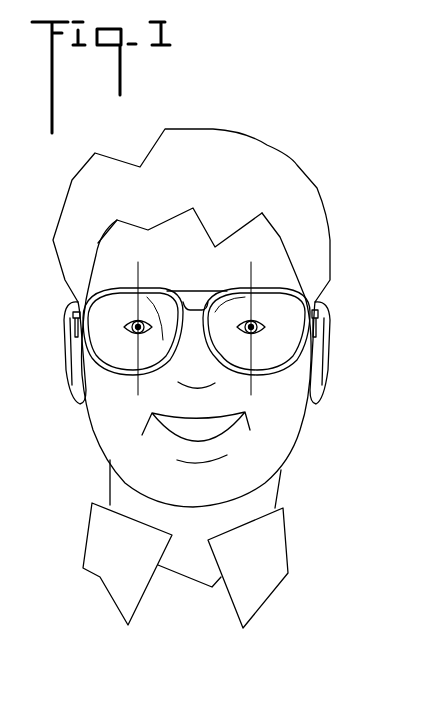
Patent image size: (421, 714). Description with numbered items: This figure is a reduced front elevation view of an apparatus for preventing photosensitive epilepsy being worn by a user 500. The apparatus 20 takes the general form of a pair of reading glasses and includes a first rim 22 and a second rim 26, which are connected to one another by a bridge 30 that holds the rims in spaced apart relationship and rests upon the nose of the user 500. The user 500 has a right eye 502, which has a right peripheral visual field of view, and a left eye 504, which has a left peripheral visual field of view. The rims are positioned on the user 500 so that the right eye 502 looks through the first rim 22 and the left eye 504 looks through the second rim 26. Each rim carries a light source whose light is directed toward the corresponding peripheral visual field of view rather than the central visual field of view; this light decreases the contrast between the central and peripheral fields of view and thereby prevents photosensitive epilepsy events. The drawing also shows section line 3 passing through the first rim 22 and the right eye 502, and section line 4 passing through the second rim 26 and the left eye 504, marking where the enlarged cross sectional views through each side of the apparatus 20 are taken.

The user 500 is at (263, 125).
The bridge 30 is at (217, 242).
The apparatus for preventing photosensitive epilepsy 20 is at (193, 280).
The first rim 22 is at (102, 368).
The second rim 26 is at (293, 367).
The right eye 502 is at (124, 328).
The left eye 504 is at (267, 329).
The section line 3- 3 is at (102, 387).
The section line 4- 4 is at (217, 387).